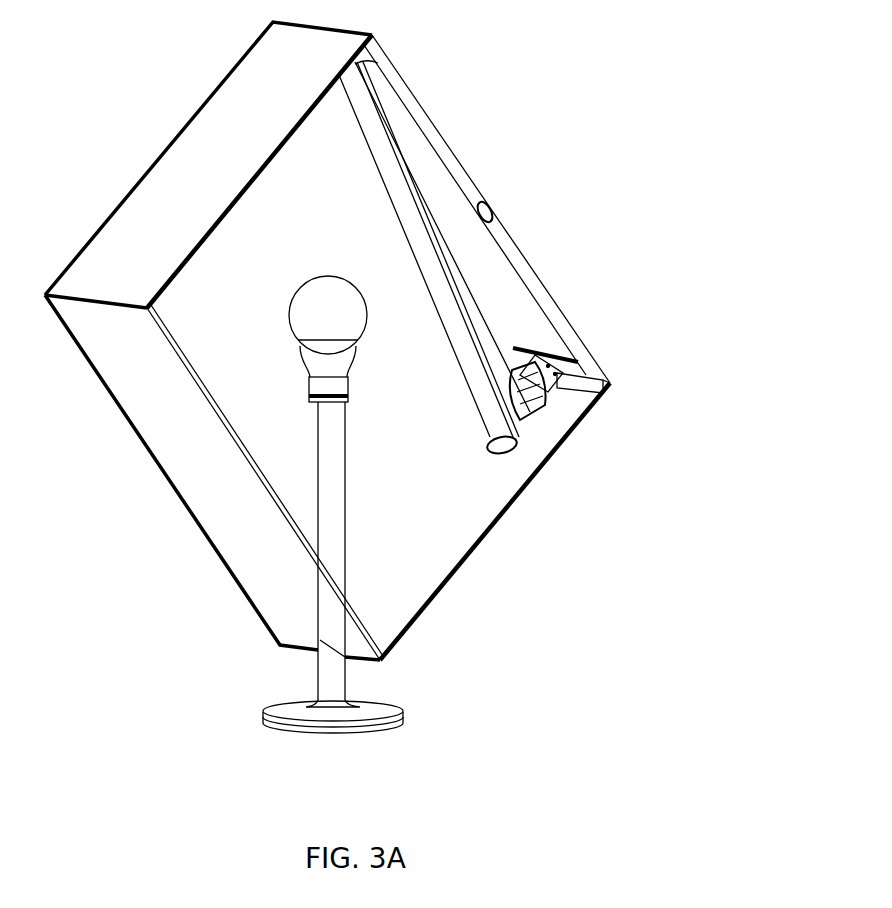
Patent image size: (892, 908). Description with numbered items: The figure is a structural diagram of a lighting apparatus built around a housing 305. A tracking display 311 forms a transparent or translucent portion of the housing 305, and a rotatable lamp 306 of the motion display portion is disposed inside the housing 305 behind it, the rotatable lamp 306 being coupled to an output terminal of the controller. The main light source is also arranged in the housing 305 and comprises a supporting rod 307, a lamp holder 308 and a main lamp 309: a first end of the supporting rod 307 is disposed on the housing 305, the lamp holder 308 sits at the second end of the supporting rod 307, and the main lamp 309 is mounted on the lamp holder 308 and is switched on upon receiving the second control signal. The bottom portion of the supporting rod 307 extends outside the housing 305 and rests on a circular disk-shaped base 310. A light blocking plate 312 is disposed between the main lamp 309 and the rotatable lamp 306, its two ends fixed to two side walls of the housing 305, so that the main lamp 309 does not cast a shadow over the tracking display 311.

The housing 305 is at (183, 437).
The rotatable lamp 306 is at (565, 361).
The supporting rod 307 is at (380, 552).
The lamp holder 308 is at (315, 390).
The main lamp 309 is at (300, 320).
The base 310 is at (403, 707).
The tracking display 311 is at (447, 193).
The light blocking plate 312 is at (353, 125).